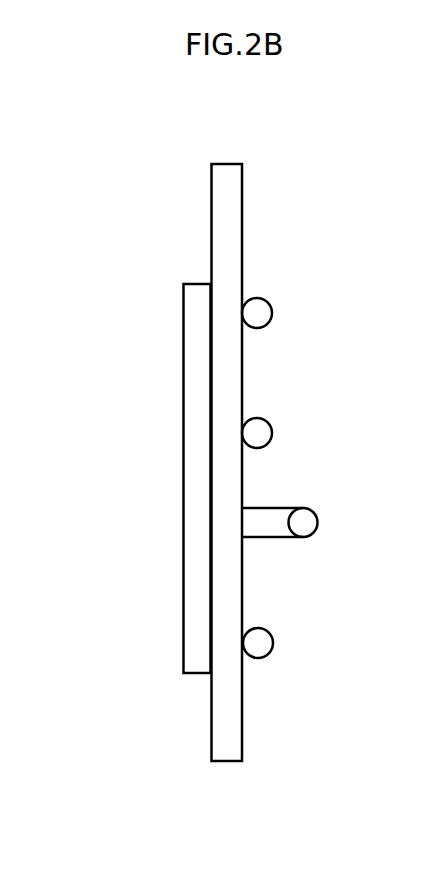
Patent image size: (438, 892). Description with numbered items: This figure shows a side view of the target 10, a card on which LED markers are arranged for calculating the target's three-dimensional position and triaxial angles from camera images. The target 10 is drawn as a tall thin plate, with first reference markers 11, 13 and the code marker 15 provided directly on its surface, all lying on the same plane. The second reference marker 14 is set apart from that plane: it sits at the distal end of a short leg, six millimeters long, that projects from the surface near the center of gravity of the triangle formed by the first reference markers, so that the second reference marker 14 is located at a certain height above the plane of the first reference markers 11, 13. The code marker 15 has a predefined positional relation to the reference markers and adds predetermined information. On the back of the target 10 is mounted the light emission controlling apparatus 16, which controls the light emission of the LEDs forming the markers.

The target 10 is at (308, 186).
The first reference marker 11 is at (272, 308).
The first reference marker 13 is at (273, 640).
The second reference marker 14 is at (320, 518).
The code marker 15 is at (273, 428).
The light emission controlling apparatus 16 is at (182, 377).